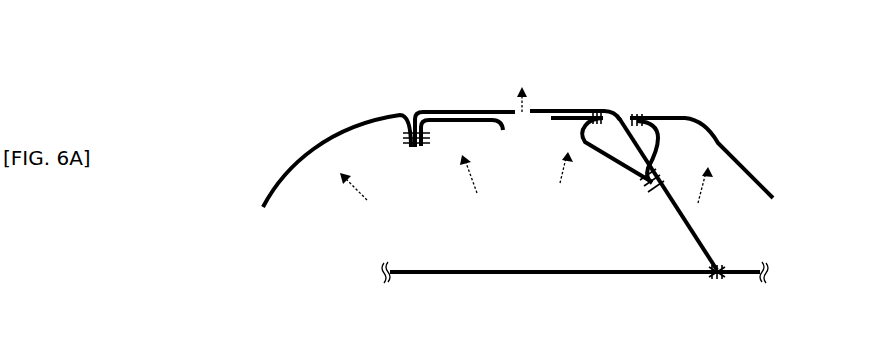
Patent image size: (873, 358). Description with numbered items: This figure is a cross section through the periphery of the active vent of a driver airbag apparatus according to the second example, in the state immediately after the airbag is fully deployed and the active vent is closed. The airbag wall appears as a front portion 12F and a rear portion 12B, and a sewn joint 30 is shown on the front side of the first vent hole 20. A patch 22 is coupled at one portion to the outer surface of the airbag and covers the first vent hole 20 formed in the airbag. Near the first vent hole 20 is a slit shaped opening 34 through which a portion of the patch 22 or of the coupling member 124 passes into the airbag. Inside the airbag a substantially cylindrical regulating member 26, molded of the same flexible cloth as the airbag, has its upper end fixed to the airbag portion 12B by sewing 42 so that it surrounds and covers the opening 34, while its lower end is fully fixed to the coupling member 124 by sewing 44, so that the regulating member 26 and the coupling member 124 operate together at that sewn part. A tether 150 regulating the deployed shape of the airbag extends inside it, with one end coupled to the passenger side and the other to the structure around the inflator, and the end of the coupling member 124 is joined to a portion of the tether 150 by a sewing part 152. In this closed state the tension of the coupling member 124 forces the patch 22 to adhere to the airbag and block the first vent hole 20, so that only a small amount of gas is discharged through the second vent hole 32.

The front panel 12F is at (290, 165).
The airbag 12B is at (748, 170).
The first vent hole 20 is at (503, 130).
The patch 22 is at (566, 110).
The regulating member 26 is at (613, 162).
The sewn portion 30 is at (423, 146).
The second vent hole 32 is at (522, 113).
The slit shaped opening 34 is at (622, 115).
The sewing 42 is at (640, 112).
The sewing 44 is at (650, 186).
The coupling member 124 is at (696, 236).
The tether 150 is at (477, 274).
The sewing part 152 is at (719, 277).